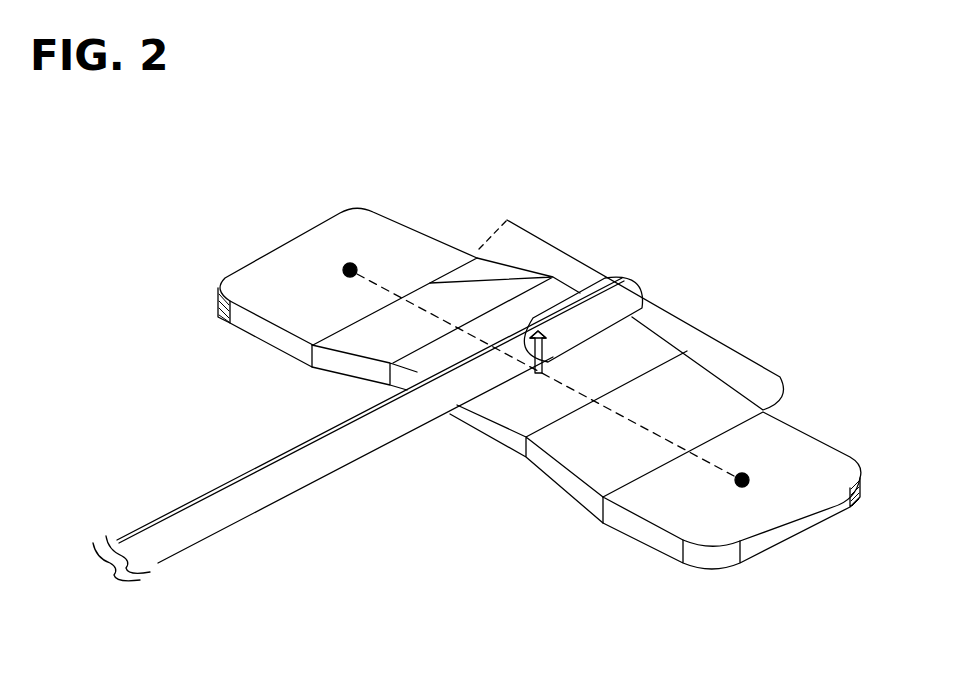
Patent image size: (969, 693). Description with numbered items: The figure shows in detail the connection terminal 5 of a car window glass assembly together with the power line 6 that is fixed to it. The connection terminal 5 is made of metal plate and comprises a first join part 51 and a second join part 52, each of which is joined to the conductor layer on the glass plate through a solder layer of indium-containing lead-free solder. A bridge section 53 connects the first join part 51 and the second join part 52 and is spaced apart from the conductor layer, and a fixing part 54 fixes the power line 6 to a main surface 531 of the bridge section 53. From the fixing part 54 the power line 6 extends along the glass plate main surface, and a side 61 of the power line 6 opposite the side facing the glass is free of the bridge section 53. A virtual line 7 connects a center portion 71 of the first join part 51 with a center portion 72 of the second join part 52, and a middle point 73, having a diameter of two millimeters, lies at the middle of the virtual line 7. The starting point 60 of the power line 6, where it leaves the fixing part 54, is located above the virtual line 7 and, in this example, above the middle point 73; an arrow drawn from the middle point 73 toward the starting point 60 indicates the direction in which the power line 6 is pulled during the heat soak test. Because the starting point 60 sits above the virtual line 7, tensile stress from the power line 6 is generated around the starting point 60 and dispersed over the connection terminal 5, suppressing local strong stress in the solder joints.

The connection terminal 5 is at (521, 189).
The power line 6 is at (358, 435).
The virtual line 7 is at (606, 421).
The first join part 51 is at (825, 488).
The second join part 52 is at (381, 241).
The bridge section 53 is at (652, 303).
The main surface of the bridge section 531 is at (647, 345).
The fixing part 54 is at (593, 335).
The starting point 60 is at (534, 328).
The side of the power line 61 is at (477, 356).
The center portion of the first join part 71 is at (751, 494).
The center portion of the second join part 72 is at (337, 267).
The middle point 73 is at (537, 380).